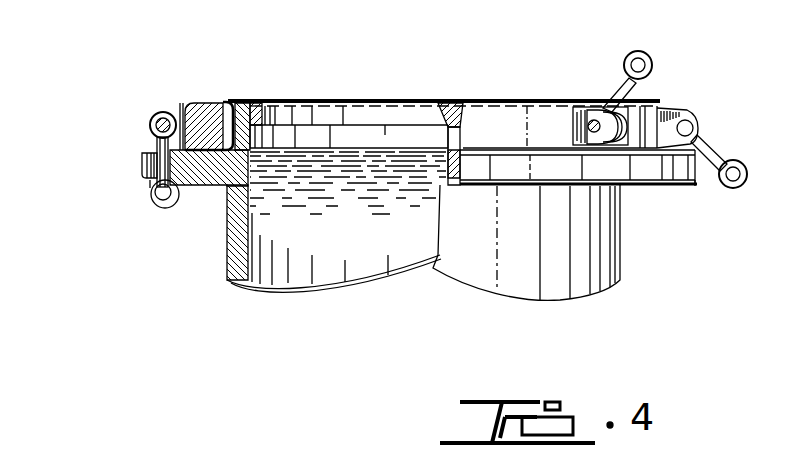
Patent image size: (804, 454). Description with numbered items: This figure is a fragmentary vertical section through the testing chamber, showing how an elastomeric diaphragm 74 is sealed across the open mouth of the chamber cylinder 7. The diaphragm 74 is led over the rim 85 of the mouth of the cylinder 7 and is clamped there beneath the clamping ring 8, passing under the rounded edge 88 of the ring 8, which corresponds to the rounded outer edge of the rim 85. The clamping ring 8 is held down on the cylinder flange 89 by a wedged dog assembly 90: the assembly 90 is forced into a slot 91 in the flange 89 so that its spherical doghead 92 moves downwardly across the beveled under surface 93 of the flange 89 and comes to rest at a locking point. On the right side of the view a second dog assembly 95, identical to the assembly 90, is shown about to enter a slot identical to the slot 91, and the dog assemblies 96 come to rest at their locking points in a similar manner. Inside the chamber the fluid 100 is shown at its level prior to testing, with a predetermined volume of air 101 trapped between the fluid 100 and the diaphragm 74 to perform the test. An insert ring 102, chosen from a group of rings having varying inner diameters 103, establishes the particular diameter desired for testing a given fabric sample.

The chamber cylinder 7 is at (233, 258).
The clamping ring 8 is at (226, 104).
The diaphragm 74 is at (355, 99).
The rim 85 is at (234, 104).
The rounded edge 88 is at (220, 102).
The cylinder flange 89 is at (198, 170).
The wedged dog assembly 90 is at (163, 147).
The slot 91 is at (145, 172).
The spherical doghead 92 is at (164, 204).
The beveled under surface 93 is at (150, 188).
The dog assembly 95 is at (712, 142).
The cover clamp dog assembly 96 is at (628, 84).
The fluid 100 is at (353, 146).
The air 101 is at (396, 119).
The insert ring 102 is at (262, 102).
The inner diameter 103 is at (328, 110).